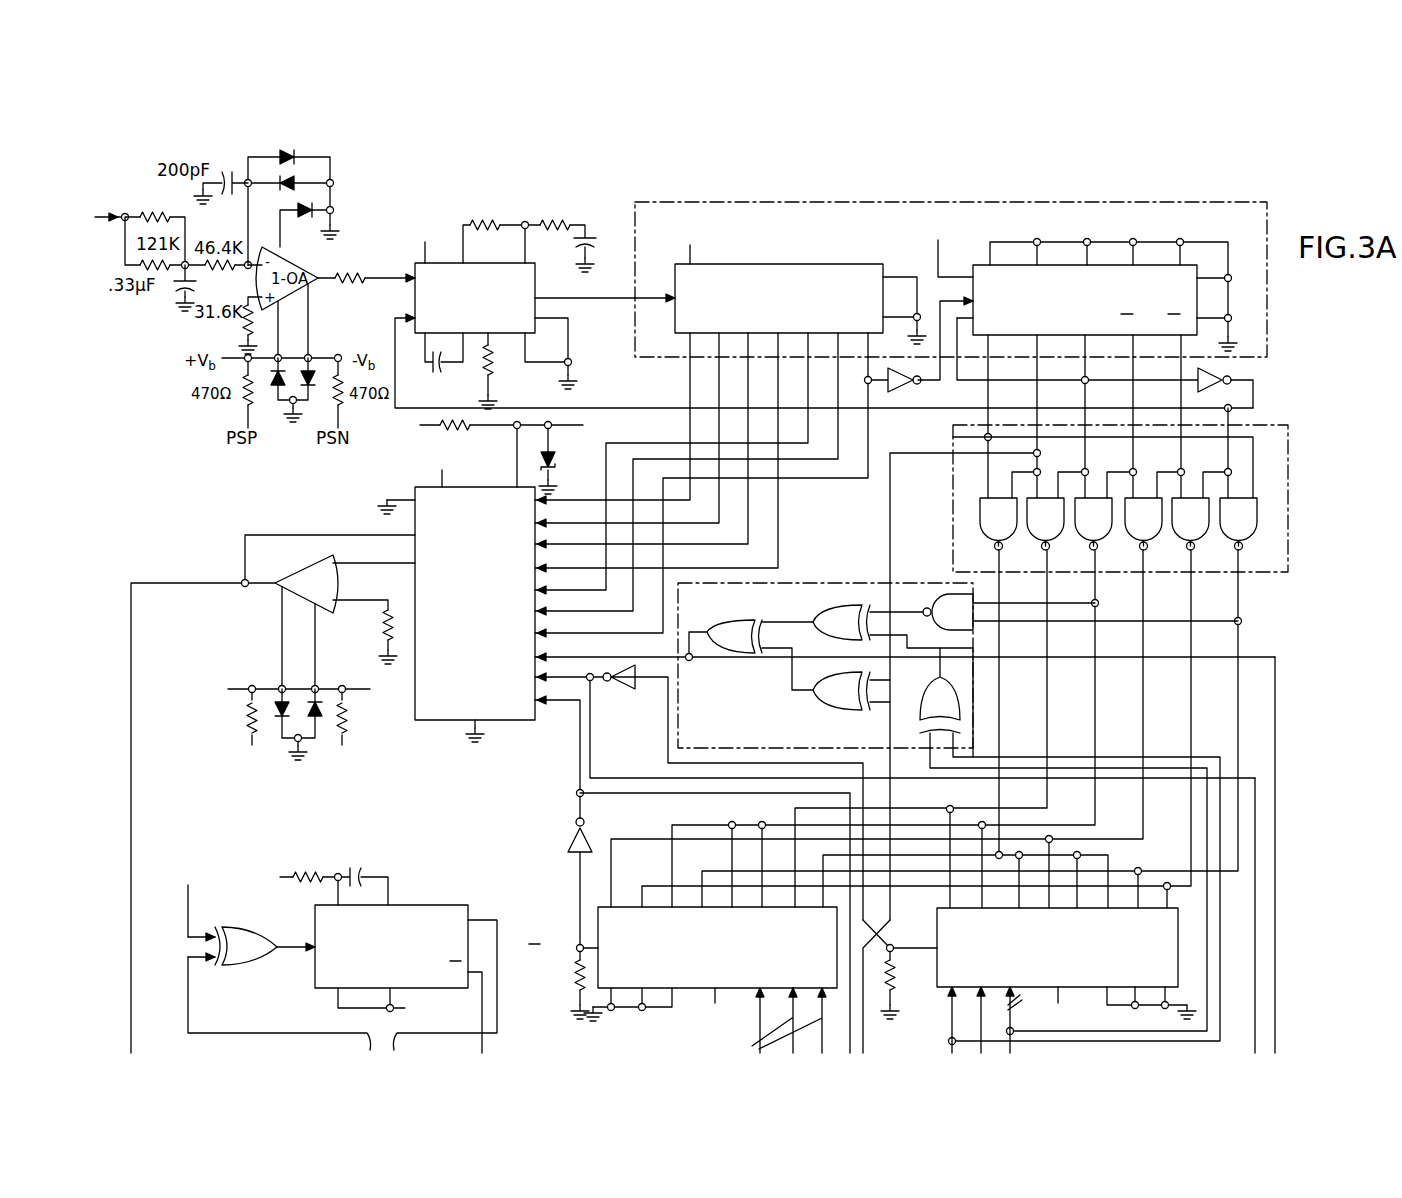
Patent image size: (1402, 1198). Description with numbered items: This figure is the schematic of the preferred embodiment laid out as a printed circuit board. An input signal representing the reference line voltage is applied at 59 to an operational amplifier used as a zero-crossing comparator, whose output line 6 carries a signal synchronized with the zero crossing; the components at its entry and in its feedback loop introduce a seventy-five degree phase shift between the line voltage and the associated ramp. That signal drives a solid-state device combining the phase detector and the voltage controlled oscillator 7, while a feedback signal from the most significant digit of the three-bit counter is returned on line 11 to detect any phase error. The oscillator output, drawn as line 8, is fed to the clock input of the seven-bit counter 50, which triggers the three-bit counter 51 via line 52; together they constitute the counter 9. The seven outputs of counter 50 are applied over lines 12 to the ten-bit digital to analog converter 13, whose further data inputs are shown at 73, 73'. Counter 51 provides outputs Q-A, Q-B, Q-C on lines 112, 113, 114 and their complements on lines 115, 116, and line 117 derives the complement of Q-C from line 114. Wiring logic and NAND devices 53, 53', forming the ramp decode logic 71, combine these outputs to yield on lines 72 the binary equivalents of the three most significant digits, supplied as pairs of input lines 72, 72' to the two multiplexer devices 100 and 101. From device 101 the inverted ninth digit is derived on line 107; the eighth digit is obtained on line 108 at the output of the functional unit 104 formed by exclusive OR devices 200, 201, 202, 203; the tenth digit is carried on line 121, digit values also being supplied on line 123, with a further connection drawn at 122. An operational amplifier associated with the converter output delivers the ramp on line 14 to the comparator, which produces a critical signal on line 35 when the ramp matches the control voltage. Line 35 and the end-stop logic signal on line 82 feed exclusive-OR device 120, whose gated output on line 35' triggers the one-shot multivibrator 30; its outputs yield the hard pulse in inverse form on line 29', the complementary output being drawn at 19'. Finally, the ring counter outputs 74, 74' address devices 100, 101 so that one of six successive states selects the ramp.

The input 59 is at (110, 214).
The output line 6 is at (378, 283).
The feedback line 11 is at (395, 333).
The voltage controlled oscillator 7 is at (538, 285).
The clock line 8 is at (585, 298).
The counter 9 is at (718, 202).
The seven-bit counter 50 is at (827, 264).
The three-bit counter 51 is at (975, 265).
The line 52 is at (942, 309).
The digital to analog converter 13 is at (412, 488).
The output line 14 is at (190, 584).
The lines 12 is at (866, 440).
The data input line 73 is at (905, 647).
The data input line 73' is at (891, 842).
The ramp decode logic 71 is at (951, 425).
The NAND devices 53 is at (1059, 532).
The NAND devices 53' is at (1215, 533).
The lines 72 is at (926, 729).
The input lines 72' is at (1052, 858).
The functional unit 104 is at (872, 583).
The line 108 is at (690, 640).
The exclusive OR device 203 is at (722, 623).
The exclusive OR device 201 is at (838, 612).
The exclusive OR device 202 is at (825, 694).
The exclusive OR device 200 is at (928, 696).
The line 112 is at (989, 401).
The line 113 is at (1035, 371).
The line 114 is at (1083, 370).
The line 115 is at (1131, 370).
The line 116 is at (1179, 370).
The line 117 is at (1254, 395).
The line 121 is at (666, 790).
The control line 122 is at (1255, 790).
The line 123 is at (1262, 657).
The solid state device 100 is at (598, 990).
The solid state device 101 is at (937, 992).
The line 107 is at (886, 938).
The outputs 74 is at (776, 1020).
The input lines 74' is at (996, 1020).
The line 82 is at (186, 918).
The exclusive-OR device 120 is at (248, 928).
The line 35' is at (288, 931).
The line 35 is at (279, 1003).
The line 29' is at (462, 975).
The one-shot multivibrator 30 is at (457, 905).
The Q-bar output line 19' is at (503, 1012).